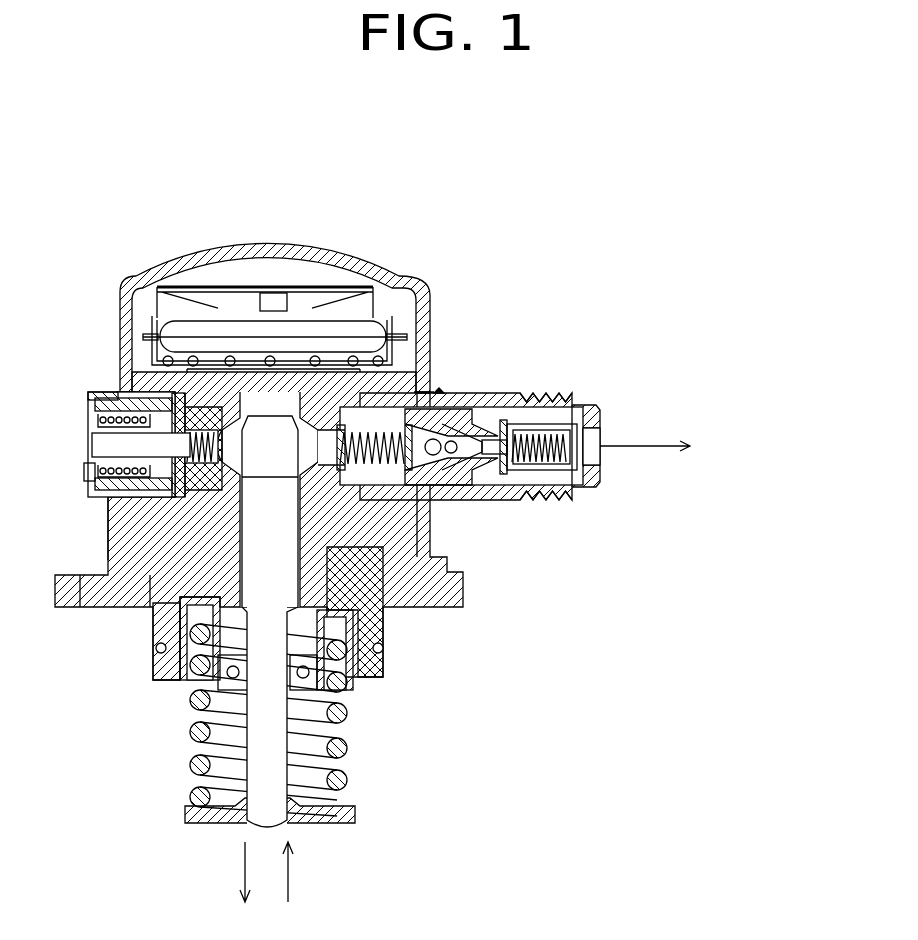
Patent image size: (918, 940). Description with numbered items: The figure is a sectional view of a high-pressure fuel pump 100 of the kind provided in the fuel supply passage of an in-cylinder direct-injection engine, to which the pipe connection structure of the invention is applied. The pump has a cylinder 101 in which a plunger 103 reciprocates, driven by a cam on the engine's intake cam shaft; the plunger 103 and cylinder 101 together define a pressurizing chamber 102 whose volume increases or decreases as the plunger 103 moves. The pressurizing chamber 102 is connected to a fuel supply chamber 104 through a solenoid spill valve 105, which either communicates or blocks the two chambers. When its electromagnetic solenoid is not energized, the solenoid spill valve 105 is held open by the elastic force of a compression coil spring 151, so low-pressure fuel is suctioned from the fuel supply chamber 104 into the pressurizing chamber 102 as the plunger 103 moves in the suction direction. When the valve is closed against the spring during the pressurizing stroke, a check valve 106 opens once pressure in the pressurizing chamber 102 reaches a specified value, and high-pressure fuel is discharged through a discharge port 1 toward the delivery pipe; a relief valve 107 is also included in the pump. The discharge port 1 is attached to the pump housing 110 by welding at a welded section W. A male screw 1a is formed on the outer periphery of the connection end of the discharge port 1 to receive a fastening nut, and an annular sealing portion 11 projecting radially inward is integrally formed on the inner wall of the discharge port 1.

The high-pressure fuel pump 100 is at (382, 234).
The cylinder 101 is at (337, 577).
The pressurizing chamber 102 is at (292, 461).
The plunger 103 is at (380, 603).
The fuel supply chamber 104 is at (152, 303).
The solenoid spill valve 105 is at (185, 430).
The compression coil spring 151 is at (108, 473).
The check valve 106 is at (554, 423).
The relief valve 107 is at (420, 468).
The pump housing 110 is at (423, 331).
The discharge port 1 is at (542, 393).
The male screw 1a is at (572, 494).
The sealing portion 11 is at (597, 466).
The welded section W is at (447, 393).